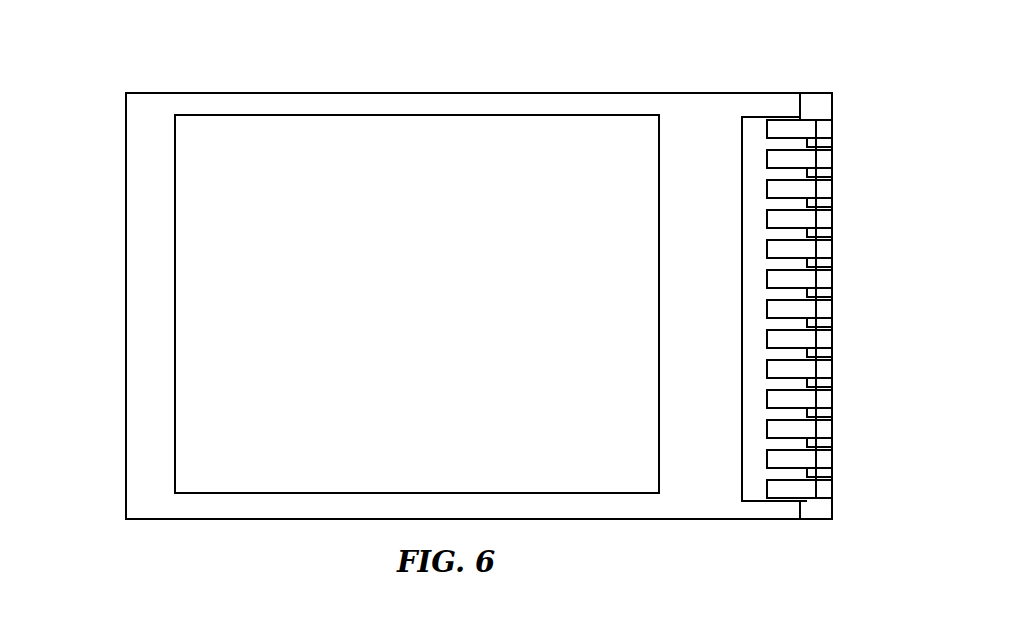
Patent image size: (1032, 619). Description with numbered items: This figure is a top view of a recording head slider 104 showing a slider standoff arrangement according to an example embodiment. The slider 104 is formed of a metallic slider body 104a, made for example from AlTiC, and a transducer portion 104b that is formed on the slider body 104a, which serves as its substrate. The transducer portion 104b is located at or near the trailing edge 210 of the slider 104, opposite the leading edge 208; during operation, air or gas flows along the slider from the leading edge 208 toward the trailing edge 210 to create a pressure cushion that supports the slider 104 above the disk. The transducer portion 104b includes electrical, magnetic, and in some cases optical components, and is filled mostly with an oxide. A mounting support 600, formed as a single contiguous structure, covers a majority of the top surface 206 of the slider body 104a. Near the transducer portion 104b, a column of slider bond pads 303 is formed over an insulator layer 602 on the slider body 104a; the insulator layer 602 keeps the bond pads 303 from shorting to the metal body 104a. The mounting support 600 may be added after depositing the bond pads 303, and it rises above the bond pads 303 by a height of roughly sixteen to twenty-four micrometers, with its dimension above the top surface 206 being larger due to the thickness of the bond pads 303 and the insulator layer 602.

The slider 104 is at (180, 92).
The mounting support 600 is at (367, 125).
The slider body 104a is at (542, 107).
The insulator layer 602 is at (753, 124).
The transducer portion 104b is at (818, 110).
The slider bond pads 303 is at (826, 128).
The leading edge 208 is at (126, 304).
The top surface 206 is at (157, 500).
The trailing edge 210 is at (832, 508).